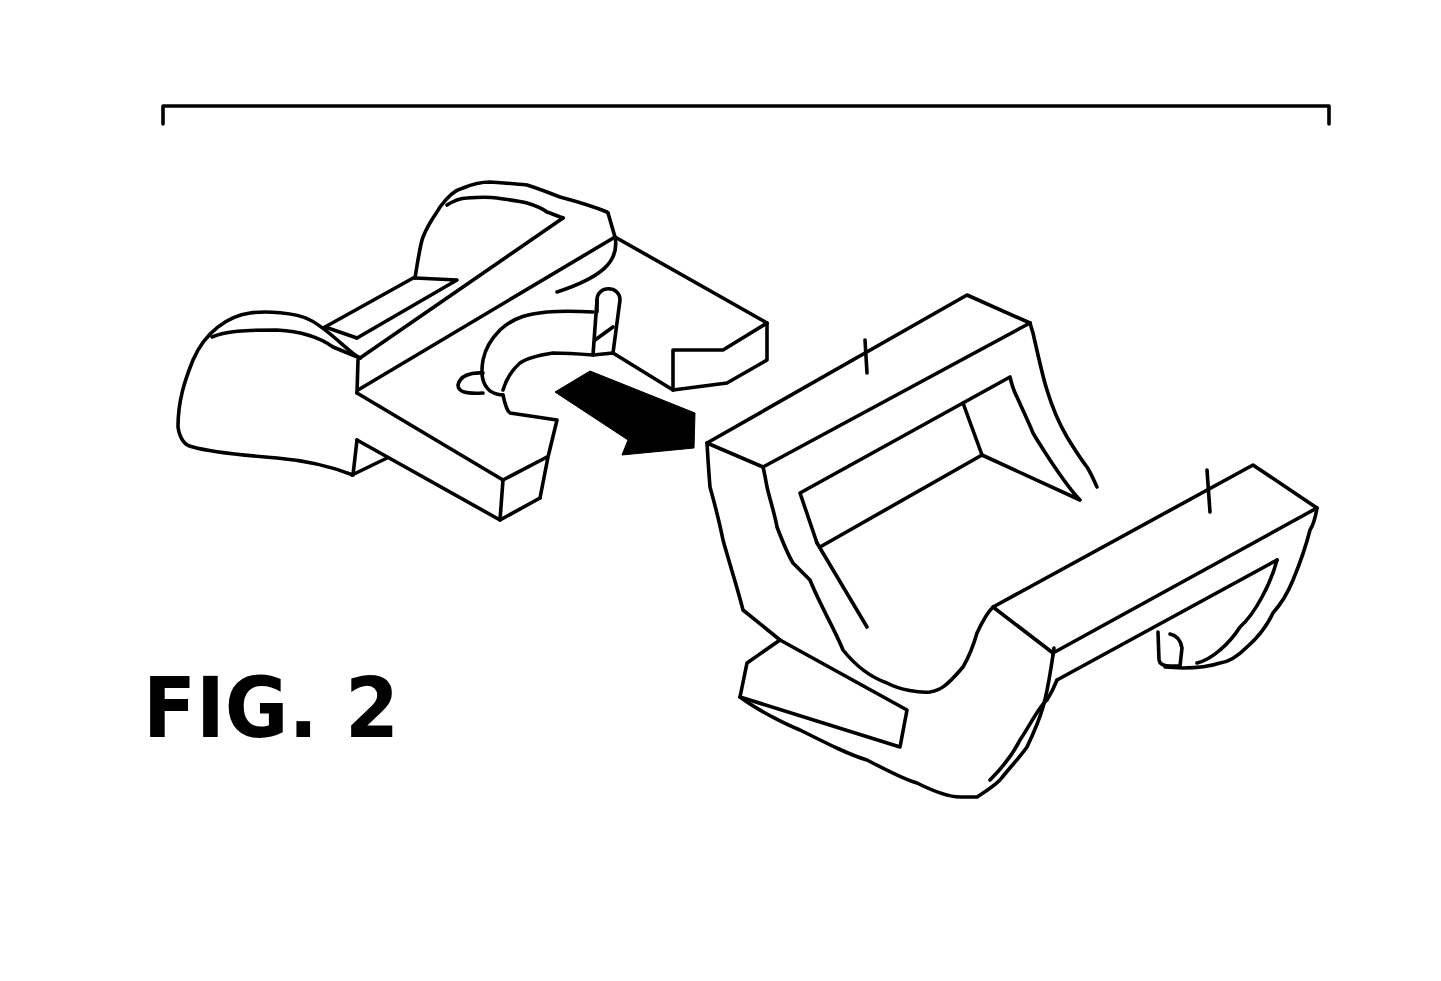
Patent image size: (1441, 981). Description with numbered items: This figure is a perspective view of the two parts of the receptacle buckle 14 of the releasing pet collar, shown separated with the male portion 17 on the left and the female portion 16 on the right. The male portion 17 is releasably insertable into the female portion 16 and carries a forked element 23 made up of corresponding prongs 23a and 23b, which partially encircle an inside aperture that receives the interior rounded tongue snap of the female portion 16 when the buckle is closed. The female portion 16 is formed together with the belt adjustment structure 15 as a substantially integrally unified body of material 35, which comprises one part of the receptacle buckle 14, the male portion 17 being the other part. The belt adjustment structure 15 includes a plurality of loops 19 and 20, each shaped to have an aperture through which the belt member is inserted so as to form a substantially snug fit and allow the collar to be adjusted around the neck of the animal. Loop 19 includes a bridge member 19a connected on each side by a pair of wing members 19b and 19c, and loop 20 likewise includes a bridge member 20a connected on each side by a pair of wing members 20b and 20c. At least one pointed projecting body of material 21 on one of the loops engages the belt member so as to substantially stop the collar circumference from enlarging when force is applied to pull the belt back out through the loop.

The receptacle buckle 14 is at (733, 106).
The belt adjustment structure 15 is at (1135, 462).
The female portion 16 is at (757, 687).
The male portion 17 is at (225, 309).
The loop 19 is at (1030, 322).
The bridge member 19a is at (867, 373).
The wing member 19b is at (743, 552).
The wing member 19c is at (1047, 407).
The loop 20 is at (1317, 515).
The bridge member 20a is at (1210, 512).
The wing member 20b is at (1045, 700).
The wing member 20c is at (1267, 600).
The pointed projecting body of material 21 is at (1182, 667).
The forked element 23 is at (635, 250).
The prong 23a is at (450, 468).
The prong 23b is at (707, 312).
The integrally unified body of material 35 is at (1095, 444).